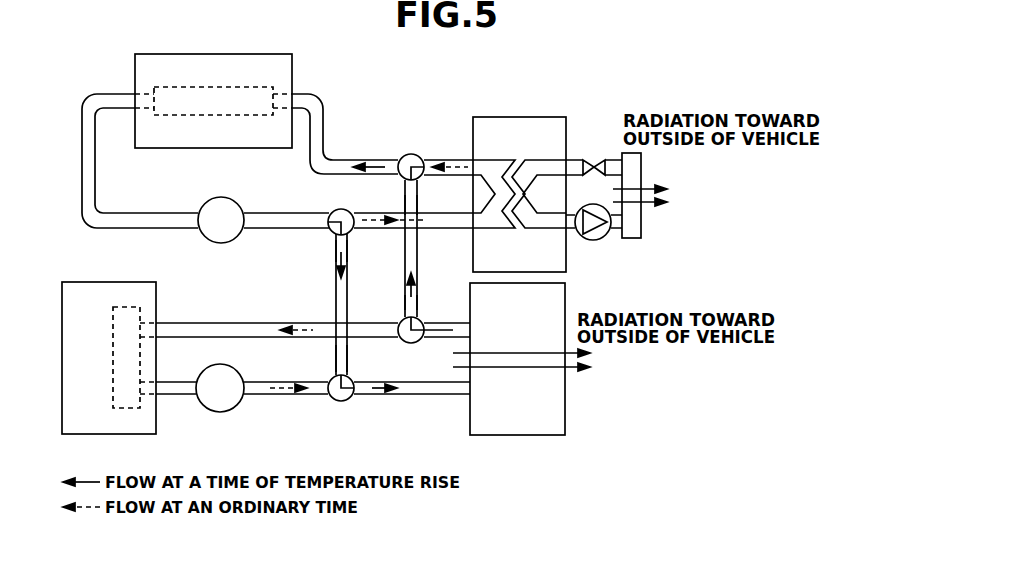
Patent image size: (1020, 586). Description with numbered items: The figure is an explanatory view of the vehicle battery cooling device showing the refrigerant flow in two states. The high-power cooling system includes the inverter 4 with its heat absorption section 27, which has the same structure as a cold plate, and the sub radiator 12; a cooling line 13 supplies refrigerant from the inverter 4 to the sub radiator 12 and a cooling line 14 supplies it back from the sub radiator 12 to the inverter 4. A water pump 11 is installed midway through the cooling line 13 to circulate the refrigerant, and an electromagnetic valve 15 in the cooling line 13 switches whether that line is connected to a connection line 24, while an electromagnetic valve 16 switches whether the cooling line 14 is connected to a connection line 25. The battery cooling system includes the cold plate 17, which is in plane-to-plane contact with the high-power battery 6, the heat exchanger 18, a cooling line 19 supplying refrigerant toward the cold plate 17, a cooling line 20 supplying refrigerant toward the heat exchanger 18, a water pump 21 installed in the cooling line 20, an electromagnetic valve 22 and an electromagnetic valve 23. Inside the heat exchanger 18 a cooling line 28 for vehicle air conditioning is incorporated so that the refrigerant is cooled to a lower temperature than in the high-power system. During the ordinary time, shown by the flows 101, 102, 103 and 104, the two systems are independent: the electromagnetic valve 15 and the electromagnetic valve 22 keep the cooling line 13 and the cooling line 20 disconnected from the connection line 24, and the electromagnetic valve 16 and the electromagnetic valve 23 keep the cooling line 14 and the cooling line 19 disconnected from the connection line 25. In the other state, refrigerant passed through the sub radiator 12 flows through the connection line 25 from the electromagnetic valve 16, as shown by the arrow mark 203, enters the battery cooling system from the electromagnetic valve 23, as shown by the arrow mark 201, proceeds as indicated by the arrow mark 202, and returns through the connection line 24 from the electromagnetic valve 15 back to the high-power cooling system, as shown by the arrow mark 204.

The inverter 4 is at (104, 282).
The high-power battery 6 is at (135, 77).
The water pump 11 is at (221, 412).
The sub radiator 12 is at (518, 436).
The cooling line 13 is at (409, 396).
The cooling line 14 is at (197, 323).
The electromagnetic valve 15 is at (341, 401).
The electromagnetic valve 16 is at (420, 318).
The cold plate 17 is at (232, 115).
The heat exchanger 18 is at (521, 117).
The cooling line 19 is at (330, 122).
The cooling line 20 is at (131, 212).
The water pump 21 is at (216, 198).
The electromagnetic valve 22 is at (331, 213).
The electromagnetic valve 23 is at (411, 154).
The connection line 24 is at (336, 284).
The connection line 25 is at (404, 265).
The heat absorption section 27 is at (130, 307).
The cooling line for vehicle air conditioning 28 is at (594, 140).
The flow 101 is at (440, 163).
The flow 102 is at (372, 216).
The flow 103 is at (293, 338).
The flow 104 is at (282, 394).
The arrow mark 201 is at (445, 199).
The arrow mark 202 is at (336, 255).
The arrow mark 203 is at (404, 300).
The arrow mark 204 is at (347, 356).